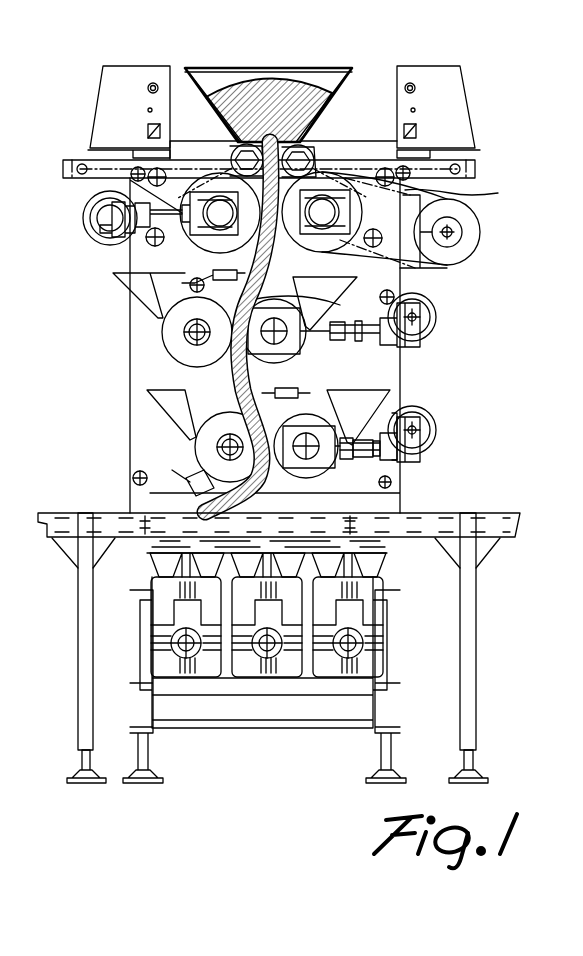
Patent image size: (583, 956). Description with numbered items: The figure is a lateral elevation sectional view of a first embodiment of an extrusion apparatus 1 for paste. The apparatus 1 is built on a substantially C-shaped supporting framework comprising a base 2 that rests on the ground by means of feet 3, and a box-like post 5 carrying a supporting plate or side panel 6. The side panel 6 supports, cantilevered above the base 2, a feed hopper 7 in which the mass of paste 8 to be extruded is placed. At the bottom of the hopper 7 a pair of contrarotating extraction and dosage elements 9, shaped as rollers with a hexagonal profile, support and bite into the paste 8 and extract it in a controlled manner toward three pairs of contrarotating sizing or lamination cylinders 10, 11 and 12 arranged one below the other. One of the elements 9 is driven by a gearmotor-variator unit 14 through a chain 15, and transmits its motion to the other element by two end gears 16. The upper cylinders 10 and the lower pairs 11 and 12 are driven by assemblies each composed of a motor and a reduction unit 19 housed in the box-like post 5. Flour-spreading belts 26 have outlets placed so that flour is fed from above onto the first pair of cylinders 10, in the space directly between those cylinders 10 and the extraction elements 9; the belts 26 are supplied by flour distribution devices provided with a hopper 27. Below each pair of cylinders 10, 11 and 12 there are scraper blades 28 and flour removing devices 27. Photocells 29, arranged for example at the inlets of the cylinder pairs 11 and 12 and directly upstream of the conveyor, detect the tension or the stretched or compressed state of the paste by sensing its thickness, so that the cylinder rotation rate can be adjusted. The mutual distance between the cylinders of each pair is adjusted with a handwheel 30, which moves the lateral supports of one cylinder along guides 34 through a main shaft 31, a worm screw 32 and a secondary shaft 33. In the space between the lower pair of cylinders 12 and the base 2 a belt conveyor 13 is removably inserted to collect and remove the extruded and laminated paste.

The apparatus 1 is at (522, 174).
The base 2 is at (310, 732).
The feet 3 is at (392, 776).
The box-like post 5 is at (130, 350).
The side panel 6 is at (410, 383).
The feed hopper 7 is at (325, 69).
The paste 8 is at (278, 95).
The extraction and dosage elements 9 is at (240, 150).
The upper sizing cylinders 10 is at (185, 245).
The sizing cylinders 11 is at (163, 334).
The lower sizing cylinders 12 is at (195, 456).
The belt conveyor 13 is at (506, 511).
The gearmotor-variator unit 14 is at (480, 230).
The chain 15 is at (466, 189).
The end gears 16 is at (230, 160).
The reduction unit 19 is at (152, 616).
The flour-spreading belts 26 is at (98, 158).
The hopper / flour removing devices 27 is at (118, 75).
The scraper blades 28 is at (302, 307).
The photocells 29 is at (213, 270).
The handwheel 30 is at (82, 222).
The main shaft 31 is at (432, 418).
The worm screw 32 is at (416, 460).
The secondary shaft 33 is at (408, 461).
The guides 34 is at (370, 358).